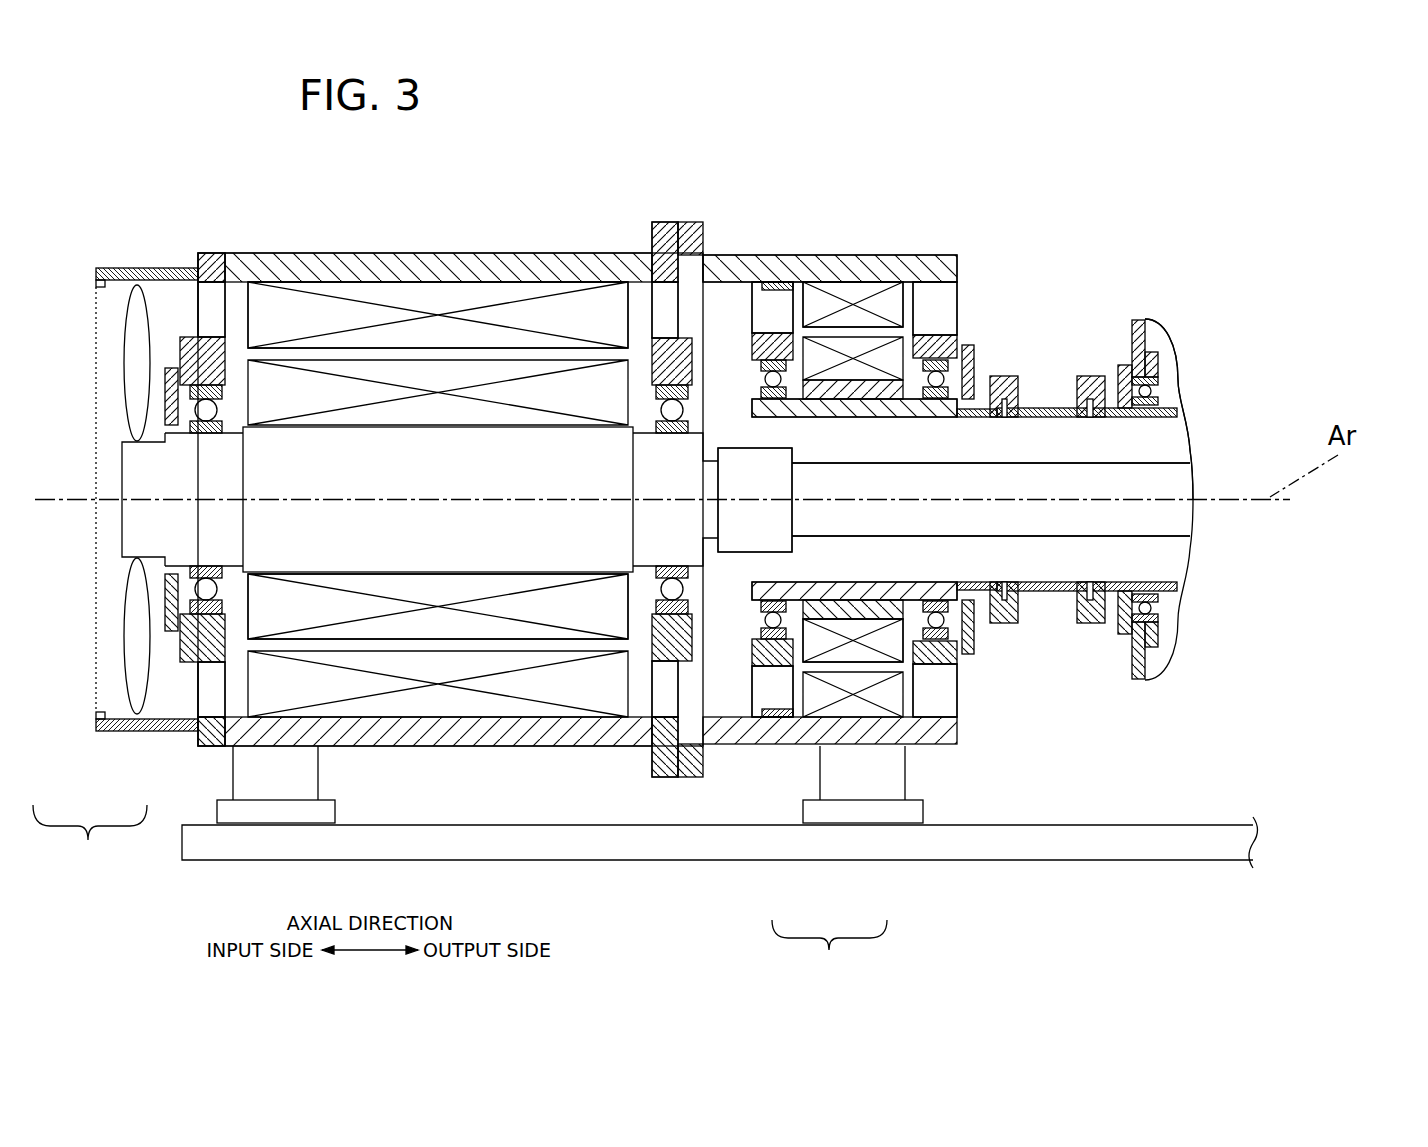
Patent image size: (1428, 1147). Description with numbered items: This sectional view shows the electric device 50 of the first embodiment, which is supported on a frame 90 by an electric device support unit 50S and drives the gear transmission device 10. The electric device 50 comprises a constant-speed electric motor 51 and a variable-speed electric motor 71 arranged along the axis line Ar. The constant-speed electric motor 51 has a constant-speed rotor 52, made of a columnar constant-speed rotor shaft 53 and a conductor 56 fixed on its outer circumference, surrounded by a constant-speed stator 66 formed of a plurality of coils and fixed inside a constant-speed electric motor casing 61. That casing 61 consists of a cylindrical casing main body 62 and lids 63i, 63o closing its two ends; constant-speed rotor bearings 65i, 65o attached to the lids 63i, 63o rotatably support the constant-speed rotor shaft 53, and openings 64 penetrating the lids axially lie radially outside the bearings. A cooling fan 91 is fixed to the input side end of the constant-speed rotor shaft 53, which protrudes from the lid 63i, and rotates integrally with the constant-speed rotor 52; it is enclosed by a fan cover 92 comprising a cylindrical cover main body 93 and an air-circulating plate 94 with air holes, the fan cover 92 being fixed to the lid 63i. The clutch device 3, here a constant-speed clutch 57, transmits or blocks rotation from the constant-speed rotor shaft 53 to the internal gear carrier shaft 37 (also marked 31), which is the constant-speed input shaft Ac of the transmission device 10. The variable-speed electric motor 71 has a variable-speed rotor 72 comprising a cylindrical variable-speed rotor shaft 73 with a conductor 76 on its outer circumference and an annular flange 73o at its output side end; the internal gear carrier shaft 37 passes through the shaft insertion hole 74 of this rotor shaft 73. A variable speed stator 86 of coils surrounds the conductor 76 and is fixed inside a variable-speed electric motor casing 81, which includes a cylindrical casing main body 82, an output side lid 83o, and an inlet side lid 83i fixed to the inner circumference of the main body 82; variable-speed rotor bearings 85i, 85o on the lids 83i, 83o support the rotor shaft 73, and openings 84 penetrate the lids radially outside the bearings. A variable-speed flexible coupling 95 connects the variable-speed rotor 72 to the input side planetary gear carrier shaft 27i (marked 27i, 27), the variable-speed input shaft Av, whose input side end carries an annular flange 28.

The gear transmission device 10 is at (1212, 630).
The output shaft 27 is at (1169, 409).
The input side planetary gear carrier shaft 27i is at (1178, 376).
The annular flange 28 is at (1138, 320).
The shaft 31 is at (991, 499).
The internal gear carrier shaft 37 is at (1165, 525).
The clutch device 3 is at (755, 500).
The electric device 50 is at (210, 240).
The electric device support unit 50S is at (260, 790).
The constant-speed electric motor 51 is at (228, 205).
The constant-speed rotor 52 is at (382, 662).
The constant-speed rotor shaft 53 is at (537, 545).
The conductor 56 is at (457, 620).
The constant-speed clutch 57 is at (740, 448).
The constant-speed electric motor casing 61 is at (470, 243).
The casing main body 62 is at (514, 268).
The lid 63i is at (202, 266).
The lid 63o is at (667, 222).
The openings 64 is at (212, 290).
The constant-speed rotor bearing 65i is at (212, 410).
The constant-speed rotor bearing 65o is at (665, 410).
The constant-speed stator 66 is at (410, 300).
The variable-speed electric motor 71 is at (947, 243).
The variable-speed rotor 72 is at (829, 953).
The variable-speed rotor shaft 73 is at (822, 610).
The annular flange 73o is at (1000, 376).
The shaft insertion hole 74 is at (785, 582).
The conductor 76 is at (865, 650).
The variable-speed electric motor casing 81 is at (846, 243).
The casing main body 82 is at (884, 300).
The inlet side lid 83i is at (785, 285).
The output side lid 83o is at (922, 300).
The openings 84 is at (764, 285).
The variable-speed rotor bearing 85i is at (770, 379).
The variable-speed rotor bearing 85o is at (945, 376).
The variable speed stator 86 is at (900, 292).
The frame 90 is at (1025, 850).
The cooling fan 91 is at (127, 262).
The fan cover 92 is at (90, 845).
The cover main body 93 is at (118, 732).
The air-circulating plate 94 is at (96, 664).
The variable-speed flexible coupling 95 is at (1053, 408).